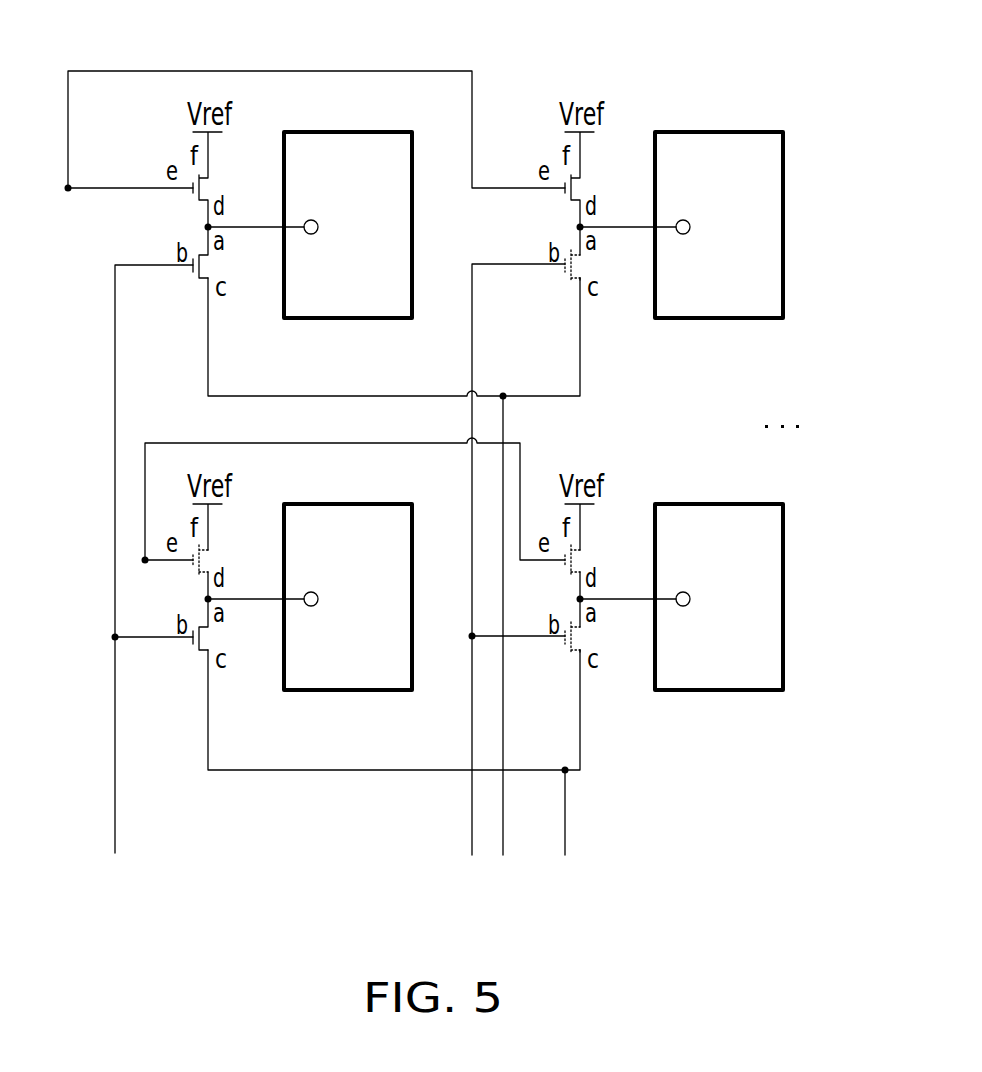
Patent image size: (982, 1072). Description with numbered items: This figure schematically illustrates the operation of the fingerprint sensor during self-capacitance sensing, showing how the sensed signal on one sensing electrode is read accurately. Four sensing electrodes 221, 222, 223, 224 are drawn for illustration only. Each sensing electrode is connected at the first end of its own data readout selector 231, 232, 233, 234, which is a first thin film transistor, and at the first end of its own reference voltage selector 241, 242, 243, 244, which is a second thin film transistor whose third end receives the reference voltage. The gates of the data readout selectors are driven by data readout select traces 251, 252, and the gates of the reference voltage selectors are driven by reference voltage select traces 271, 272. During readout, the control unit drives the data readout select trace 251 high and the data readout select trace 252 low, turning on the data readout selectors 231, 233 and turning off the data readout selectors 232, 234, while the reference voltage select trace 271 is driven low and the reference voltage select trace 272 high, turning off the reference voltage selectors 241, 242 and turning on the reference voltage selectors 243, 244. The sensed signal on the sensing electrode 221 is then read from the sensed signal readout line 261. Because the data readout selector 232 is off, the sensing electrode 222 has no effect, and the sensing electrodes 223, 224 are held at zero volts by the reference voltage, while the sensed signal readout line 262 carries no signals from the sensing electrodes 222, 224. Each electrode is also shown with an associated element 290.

The sensing electrode 221 is at (348, 690).
The sensing electrode 222 is at (720, 690).
The sensing electrode 223 is at (348, 318).
The sensing electrode 224 is at (720, 318).
The data readout selector 231 is at (206, 636).
The data readout selector 232 is at (578, 636).
The data readout selector 233 is at (206, 264).
The data readout selector 234 is at (578, 264).
The reference voltage selector 241 is at (215, 552).
The reference voltage selector 242 is at (588, 552).
The reference voltage selector 243 is at (220, 178).
The reference voltage selector 244 is at (592, 178).
The data readout select trace 251 is at (115, 828).
The data readout select trace 252 is at (472, 805).
The sensed signal readout line 261 is at (565, 845).
The sensed signal readout line 262 is at (580, 390).
The reference voltage select trace 271 is at (520, 445).
The reference voltage select trace 272 is at (68, 93).
The light emitting element 290 is at (316, 221).